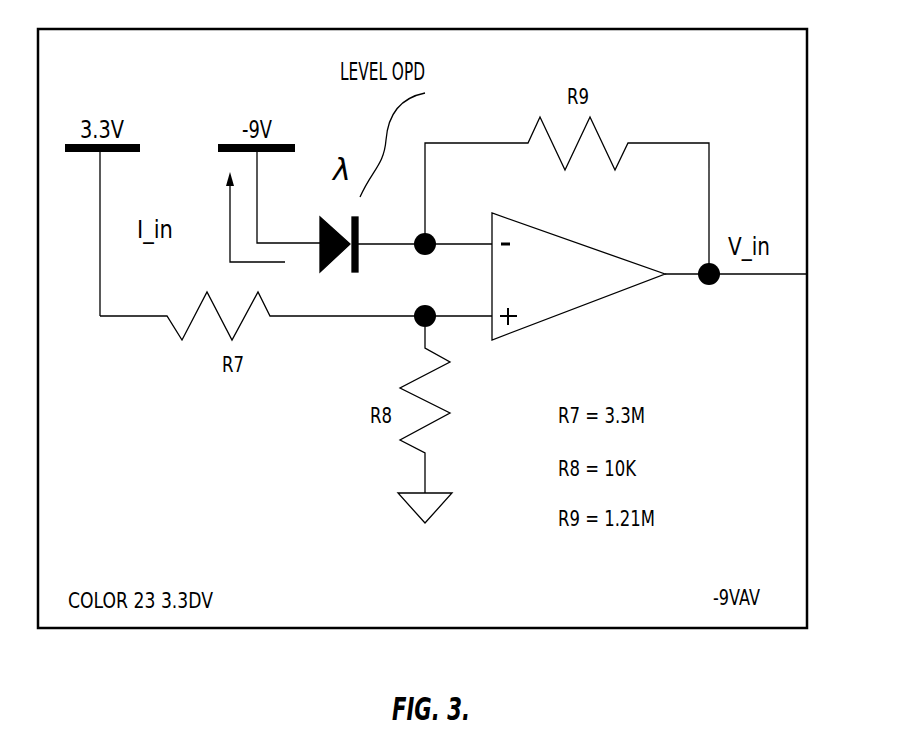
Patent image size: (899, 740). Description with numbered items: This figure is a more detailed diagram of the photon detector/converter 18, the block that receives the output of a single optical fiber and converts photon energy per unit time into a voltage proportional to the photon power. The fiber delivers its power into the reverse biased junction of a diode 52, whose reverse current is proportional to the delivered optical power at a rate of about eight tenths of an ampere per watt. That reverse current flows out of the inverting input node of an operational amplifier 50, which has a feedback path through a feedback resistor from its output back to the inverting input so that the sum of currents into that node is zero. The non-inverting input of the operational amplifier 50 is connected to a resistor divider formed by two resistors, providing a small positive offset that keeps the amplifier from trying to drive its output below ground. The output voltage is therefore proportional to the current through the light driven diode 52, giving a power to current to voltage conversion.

The photon detector/converter 18 is at (808, 105).
The operational amplifier 50 is at (578, 306).
The diode 52 is at (332, 264).